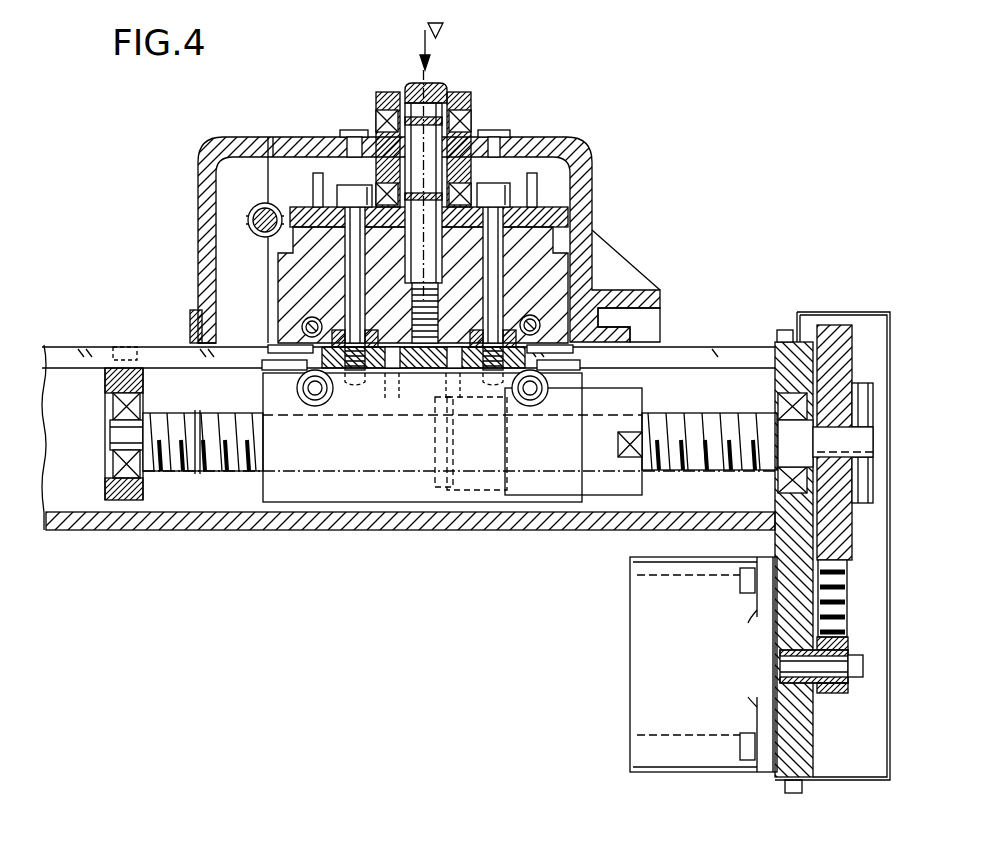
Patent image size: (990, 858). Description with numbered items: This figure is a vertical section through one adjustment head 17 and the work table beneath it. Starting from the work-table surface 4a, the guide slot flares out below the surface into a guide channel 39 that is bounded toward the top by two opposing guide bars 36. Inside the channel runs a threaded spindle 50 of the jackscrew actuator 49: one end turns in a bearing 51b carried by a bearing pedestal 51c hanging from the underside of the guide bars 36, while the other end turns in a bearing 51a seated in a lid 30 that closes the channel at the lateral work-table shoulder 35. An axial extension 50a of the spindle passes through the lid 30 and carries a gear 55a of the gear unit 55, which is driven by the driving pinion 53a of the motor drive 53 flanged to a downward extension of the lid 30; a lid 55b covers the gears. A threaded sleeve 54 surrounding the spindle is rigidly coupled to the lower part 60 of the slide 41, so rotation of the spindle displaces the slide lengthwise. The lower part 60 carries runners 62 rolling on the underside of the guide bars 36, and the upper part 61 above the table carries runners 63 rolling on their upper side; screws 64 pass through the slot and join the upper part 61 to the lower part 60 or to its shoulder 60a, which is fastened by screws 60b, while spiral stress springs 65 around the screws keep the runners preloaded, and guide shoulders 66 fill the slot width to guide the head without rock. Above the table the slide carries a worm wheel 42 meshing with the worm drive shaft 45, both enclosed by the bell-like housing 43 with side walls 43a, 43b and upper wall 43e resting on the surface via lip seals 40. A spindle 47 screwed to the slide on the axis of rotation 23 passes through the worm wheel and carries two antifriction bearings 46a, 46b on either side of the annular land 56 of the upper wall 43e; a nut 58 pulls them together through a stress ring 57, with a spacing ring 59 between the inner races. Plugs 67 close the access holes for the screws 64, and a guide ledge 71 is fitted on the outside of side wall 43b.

The work-table surface 4a is at (86, 345).
The adjustment head 17 is at (424, 236).
The axis of rotation 23 is at (430, 77).
The lid 30 is at (805, 353).
The lateral work-table shoulder 35 is at (411, 418).
The guide bars 36 is at (162, 345).
The guide channel 39 is at (70, 497).
The lip seals 40 is at (192, 320).
The slide 41 is at (240, 486).
The worm wheel 42 is at (296, 207).
The housing 43 is at (588, 144).
The side wall 43a is at (200, 207).
The side wall 43b is at (583, 210).
The upper wall 43e is at (250, 138).
The worm drive shaft 45 is at (256, 211).
The antifriction bearing 46a is at (537, 187).
The antifriction bearing 46b is at (473, 127).
The spindle 47 is at (381, 92).
The jackscrew actuator 49 is at (880, 450).
The threaded spindle 50 is at (167, 457).
The axial extension 50a is at (853, 437).
The bearing 51a is at (781, 405).
The bearing 51b is at (116, 460).
The bearing pedestal 51c is at (110, 385).
The motor drive 53 is at (657, 650).
The driving pinion 53a is at (855, 656).
The threaded sleeve 54 is at (605, 482).
The gear unit 55 is at (877, 552).
The gear 55a is at (846, 360).
The lid 55b is at (890, 500).
The annular land 56 is at (378, 165).
The stress ring 57 is at (394, 92).
The nut 58 is at (450, 87).
The spacing ring 59 is at (473, 116).
The lower part 60 is at (313, 493).
The shoulder 60a is at (423, 371).
The screws 60b is at (430, 268).
The upper part 61 is at (557, 262).
The runners 62 is at (312, 398).
The runners 63 is at (312, 327).
The screws 64 is at (343, 272).
The spiral stress springs 65 is at (510, 323).
The guide shoulders 66 is at (275, 365).
The plug 67 is at (353, 128).
The guide ledge 71 is at (655, 325).